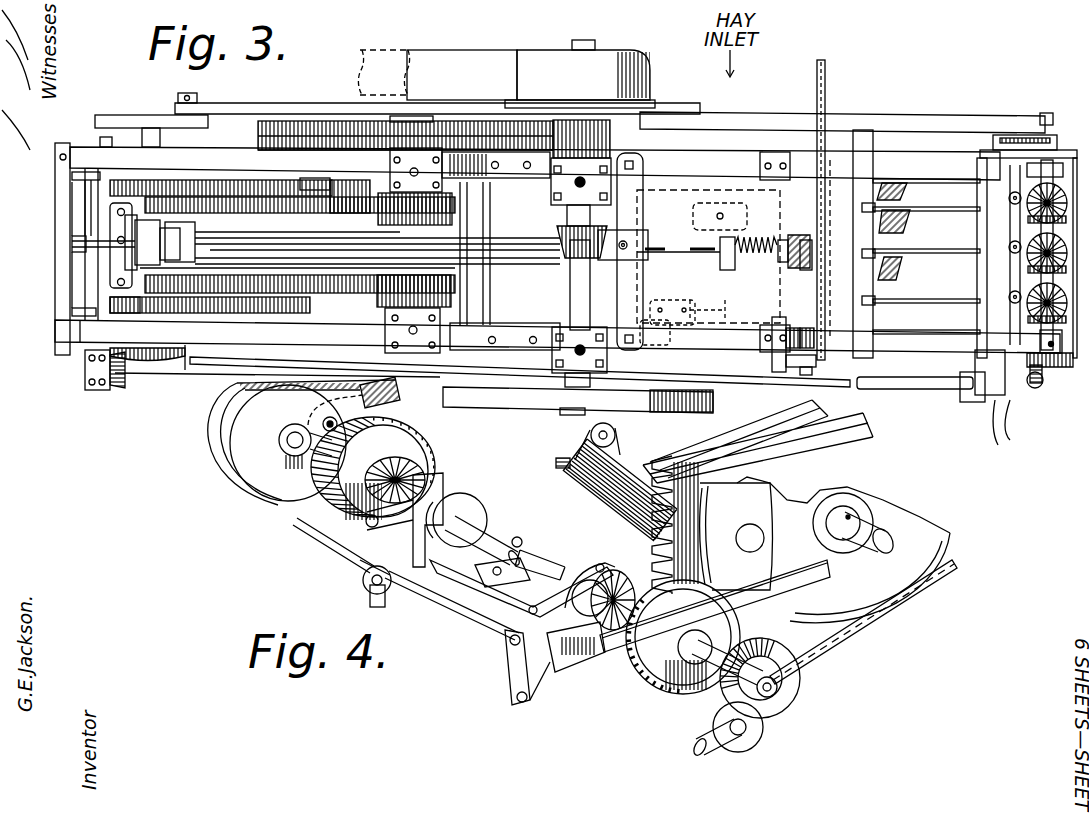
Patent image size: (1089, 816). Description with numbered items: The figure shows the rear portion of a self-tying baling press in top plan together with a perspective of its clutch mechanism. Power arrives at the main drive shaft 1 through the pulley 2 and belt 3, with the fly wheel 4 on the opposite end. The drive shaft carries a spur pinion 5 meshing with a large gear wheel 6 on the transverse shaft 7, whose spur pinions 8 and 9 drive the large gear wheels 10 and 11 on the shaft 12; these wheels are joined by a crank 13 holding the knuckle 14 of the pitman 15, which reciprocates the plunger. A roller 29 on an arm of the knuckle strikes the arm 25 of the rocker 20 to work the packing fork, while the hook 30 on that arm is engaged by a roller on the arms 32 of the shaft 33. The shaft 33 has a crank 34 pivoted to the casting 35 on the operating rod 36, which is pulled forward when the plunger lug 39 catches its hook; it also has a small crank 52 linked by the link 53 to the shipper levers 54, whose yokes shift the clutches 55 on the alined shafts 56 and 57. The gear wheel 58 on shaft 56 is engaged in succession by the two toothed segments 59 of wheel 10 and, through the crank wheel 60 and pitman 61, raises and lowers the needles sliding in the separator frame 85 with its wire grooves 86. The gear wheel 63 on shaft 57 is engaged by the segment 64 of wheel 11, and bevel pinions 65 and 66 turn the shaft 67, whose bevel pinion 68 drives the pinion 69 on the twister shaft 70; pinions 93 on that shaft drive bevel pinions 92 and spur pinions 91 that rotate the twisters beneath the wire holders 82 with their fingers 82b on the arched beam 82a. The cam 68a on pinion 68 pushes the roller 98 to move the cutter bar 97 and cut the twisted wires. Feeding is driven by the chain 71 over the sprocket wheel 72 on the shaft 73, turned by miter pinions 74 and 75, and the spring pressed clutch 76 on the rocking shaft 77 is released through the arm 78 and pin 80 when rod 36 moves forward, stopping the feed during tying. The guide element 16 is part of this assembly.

In FIG. 3, the main drive shaft 1 is at (570, 300).
In FIG. 3, the band wheel or pulley 2 is at (650, 80).
In FIG. 3, the band or belt 3 is at (440, 58).
In FIG. 3, the fly or balance wheel 4 is at (713, 404).
In FIG. 3, the spur pinion 5 is at (611, 140).
In FIG. 3, the gear wheel 6 is at (455, 128).
In FIG. 3, the transverse shaft (counter shaft) 7 is at (455, 232).
In FIG. 3, the spur pinion 8 is at (455, 208).
In FIG. 3, the spur pinion 9 is at (455, 290).
In FIG. 3, the gear wheel 10 is at (240, 198).
In FIG. 3, the gear wheel 11 is at (246, 290).
In FIG. 3, the shaft 12 is at (300, 121).
In FIG. 4, the shaft 12 is at (880, 548).
In FIG. 3, the crank 13 is at (172, 177).
In FIG. 4, the crank 13 is at (562, 470).
In FIG. 3, the knuckle 14 is at (188, 290).
In FIG. 4, the knuckle 14 is at (605, 505).
In FIG. 3, the pitman 15 is at (250, 235).
In FIG. 4, the pitman 15 is at (868, 440).
In FIG. 3, the plate 16 is at (710, 205).
In FIG. 4, the rocker 20 is at (427, 494).
In FIG. 4, the downwardly extending arm 25 is at (367, 522).
In FIG. 3, the roller 29 is at (190, 225).
In FIG. 4, the roller 29 is at (610, 436).
In FIG. 3, the hook 30 is at (115, 258).
In FIG. 4, the hook 30 is at (470, 497).
In FIG. 3, the upwardly projecting arms 32 is at (90, 250).
In FIG. 4, the upwardly projecting arms 32 is at (365, 568).
In FIG. 3, the shaft 33 is at (88, 210).
In FIG. 4, the shaft 33 is at (310, 535).
In FIG. 3, the crank 34 is at (72, 176).
In FIG. 4, the crank 34 is at (505, 660).
In FIG. 3, the casting 35 is at (80, 330).
In FIG. 4, the casting 35 is at (545, 680).
In FIG. 3, the operating rod 36 is at (200, 348).
In FIG. 4, the operating rod 36 is at (812, 580).
In FIG. 3, the lug 39 is at (672, 336).
In FIG. 3, the crank 52 is at (135, 240).
In FIG. 4, the crank 52 is at (372, 594).
In FIG. 3, the link 53 is at (128, 255).
In FIG. 4, the link 53 is at (405, 596).
In FIG. 3, the shipper levers 54 is at (72, 222).
In FIG. 4, the shipper levers 54 is at (340, 550).
In FIG. 3, the clutches 55 is at (182, 147).
In FIG. 4, the clutches 55 is at (488, 538).
In FIG. 3, the shaft 56 is at (165, 200).
In FIG. 4, the shaft 56 is at (522, 545).
In FIG. 3, the shaft 57 is at (120, 350).
In FIG. 4, the shaft 57 is at (558, 566).
In FIG. 4, the gear wheel 58 is at (428, 470).
In FIG. 3, the toothed segments 59 is at (200, 180).
In FIG. 3, the crank or wheel 60 is at (120, 122).
In FIG. 4, the crank or wheel 60 is at (253, 478).
In FIG. 3, the pitman 61 is at (280, 110).
In FIG. 4, the pitman 61 is at (395, 406).
In FIG. 3, the gear wheel 63 is at (117, 298).
In FIG. 4, the gear wheel 63 is at (665, 690).
In FIG. 3, the toothed segment 64 is at (267, 317).
In FIG. 4, the toothed segment 64 is at (740, 490).
In FIG. 3, the bevel pinion 65 is at (158, 358).
In FIG. 4, the bevel pinion 65 is at (790, 700).
In FIG. 3, the bevel pinion 66 is at (118, 388).
In FIG. 4, the bevel pinion 66 is at (760, 735).
In FIG. 3, the shaft 67 is at (960, 390).
In FIG. 4, the shaft 67 is at (870, 635).
In FIG. 3, the bevel pinion 68 is at (1010, 400).
In FIG. 3, the cam 68a is at (985, 400).
In FIG. 3, the bevel pinion 69 is at (1040, 388).
In FIG. 3, the twister shaft 70 is at (1049, 381).
In FIG. 3, the chain 71 is at (826, 103).
In FIG. 3, the sprocket wheel 72 is at (800, 262).
In FIG. 3, the shaft 73 is at (680, 252).
In FIG. 3, the miter pinion 74 is at (590, 250).
In FIG. 3, the miter pinion 75 is at (560, 243).
In FIG. 3, the spring pressed clutch 76 is at (790, 250).
In FIG. 3, the rocking shaft 77 is at (780, 318).
In FIG. 3, the arm 78 is at (800, 368).
In FIG. 3, the pin 80 is at (808, 376).
In FIG. 3, the wire holders 82 is at (1005, 227).
In FIG. 3, the arched supporting beam 82a is at (1008, 137).
In FIG. 3, the fingers 82b is at (1018, 207).
In FIG. 3, the separator frame 85 is at (897, 277).
In FIG. 3, the grooves 86 is at (897, 215).
In FIG. 3, the spur pinions 91 is at (1070, 150).
In FIG. 3, the bevel pinions 92 is at (1012, 193).
In FIG. 3, the pinions 93 is at (1030, 250).
In FIG. 3, the cutter bar 97 is at (1012, 420).
In FIG. 3, the roller 98 is at (1002, 430).